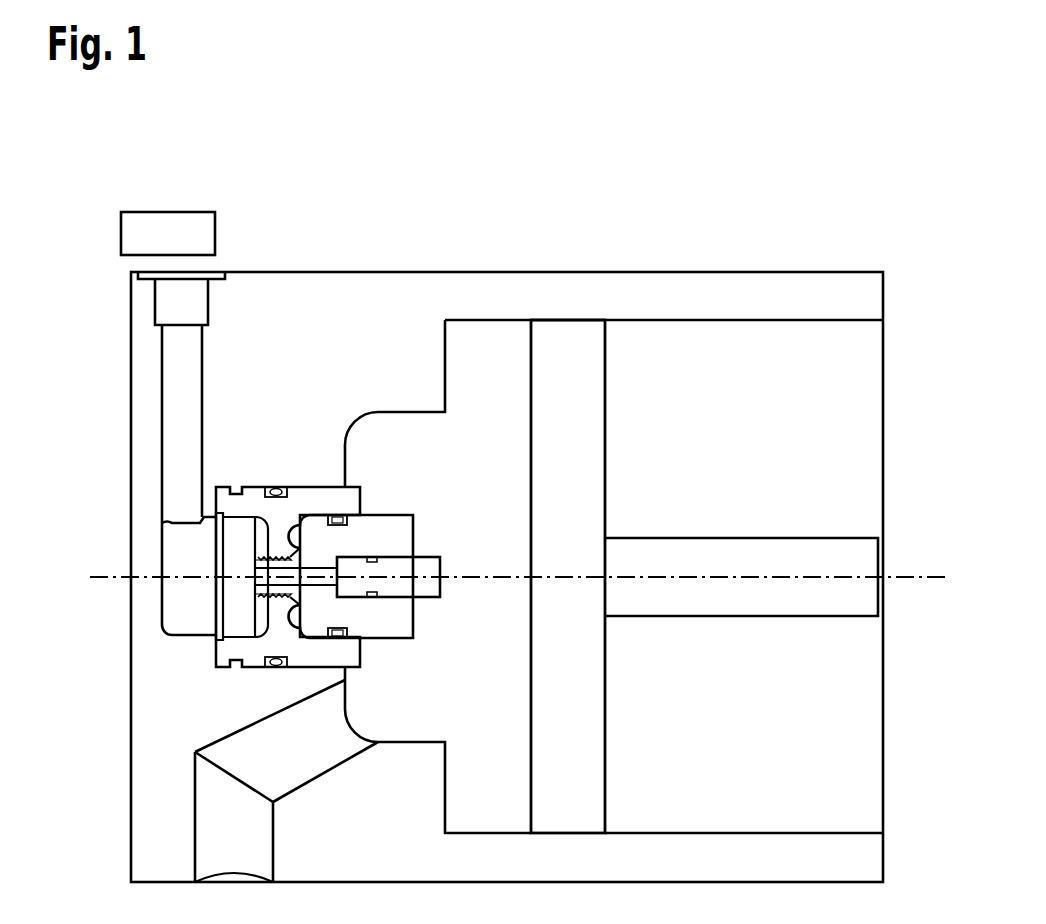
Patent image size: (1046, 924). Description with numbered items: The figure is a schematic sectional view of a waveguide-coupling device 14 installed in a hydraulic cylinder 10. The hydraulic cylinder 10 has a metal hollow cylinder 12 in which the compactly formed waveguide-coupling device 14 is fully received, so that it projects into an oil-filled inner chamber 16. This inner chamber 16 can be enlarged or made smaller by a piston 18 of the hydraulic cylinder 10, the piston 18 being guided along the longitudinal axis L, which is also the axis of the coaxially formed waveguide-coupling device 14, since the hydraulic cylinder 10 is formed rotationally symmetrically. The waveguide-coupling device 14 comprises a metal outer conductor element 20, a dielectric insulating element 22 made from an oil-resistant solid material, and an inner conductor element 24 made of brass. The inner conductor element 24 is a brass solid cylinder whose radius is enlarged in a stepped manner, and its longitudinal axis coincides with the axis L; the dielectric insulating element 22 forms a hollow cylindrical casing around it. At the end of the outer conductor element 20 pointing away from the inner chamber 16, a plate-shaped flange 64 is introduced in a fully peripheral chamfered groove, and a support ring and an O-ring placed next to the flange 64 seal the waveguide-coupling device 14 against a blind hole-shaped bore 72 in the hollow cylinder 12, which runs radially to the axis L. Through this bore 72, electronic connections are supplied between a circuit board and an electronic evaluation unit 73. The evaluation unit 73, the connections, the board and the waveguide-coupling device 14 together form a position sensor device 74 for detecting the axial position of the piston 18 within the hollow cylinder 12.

The hydraulic cylinder 10 is at (776, 231).
The hollow cylinder 12 is at (425, 374).
The waveguide-coupling device 14 is at (425, 667).
The inner chamber 16 is at (471, 787).
The piston 18 is at (596, 752).
The outer conductor element 20 is at (375, 680).
The dielectric insulating element 22 is at (430, 637).
The inner conductor element 24 is at (456, 596).
The flange 64 is at (217, 557).
The bore 72 is at (172, 378).
The electronic evaluation unit 73 is at (215, 232).
The position sensor device 74 is at (423, 487).
The longitudinal axis L is at (917, 576).